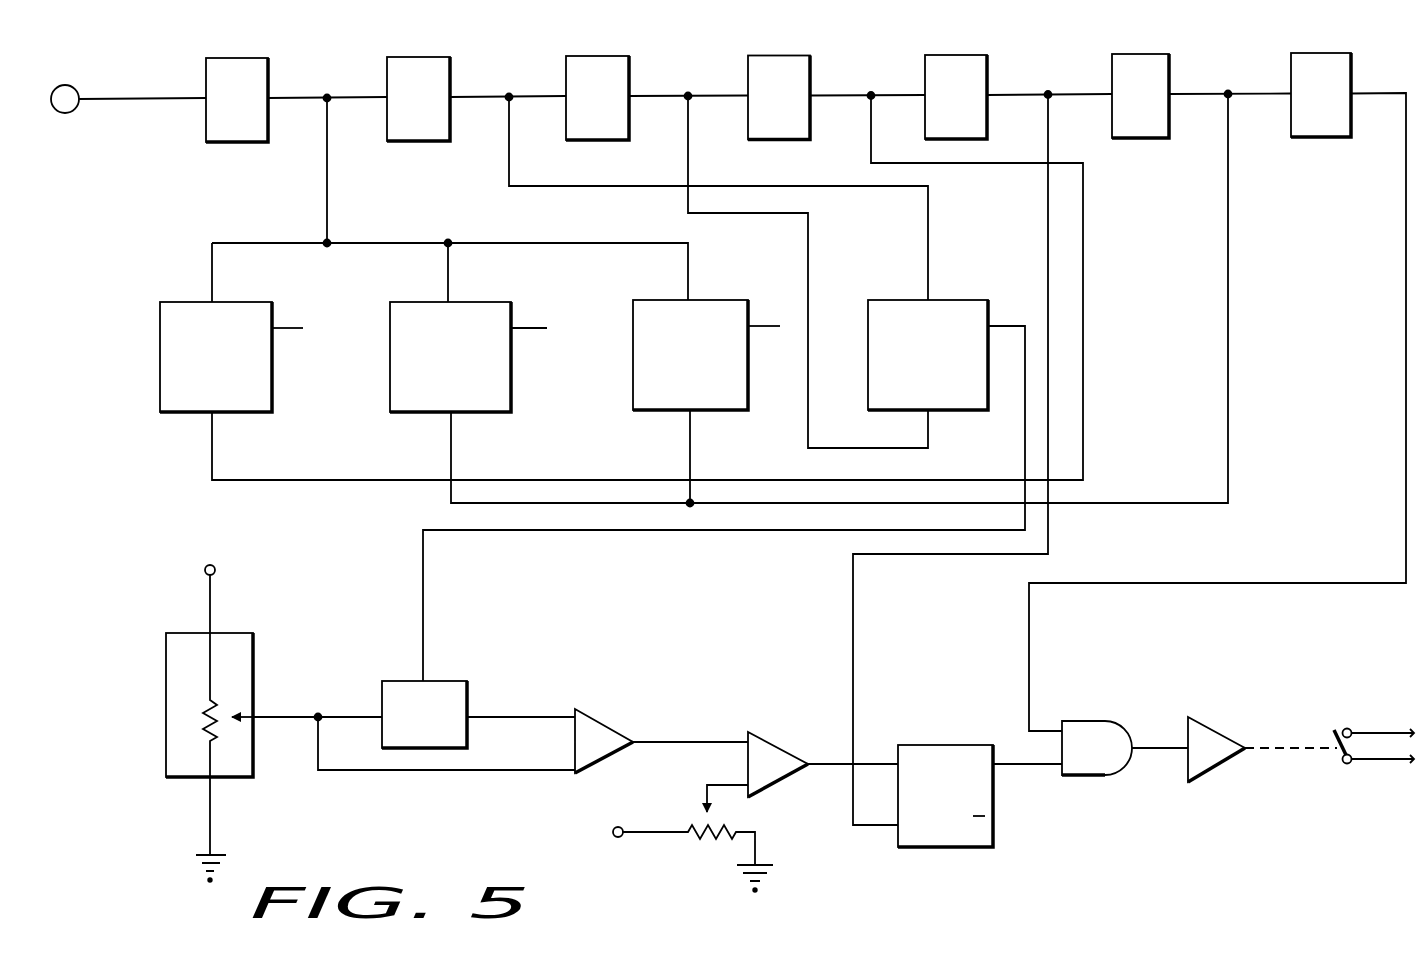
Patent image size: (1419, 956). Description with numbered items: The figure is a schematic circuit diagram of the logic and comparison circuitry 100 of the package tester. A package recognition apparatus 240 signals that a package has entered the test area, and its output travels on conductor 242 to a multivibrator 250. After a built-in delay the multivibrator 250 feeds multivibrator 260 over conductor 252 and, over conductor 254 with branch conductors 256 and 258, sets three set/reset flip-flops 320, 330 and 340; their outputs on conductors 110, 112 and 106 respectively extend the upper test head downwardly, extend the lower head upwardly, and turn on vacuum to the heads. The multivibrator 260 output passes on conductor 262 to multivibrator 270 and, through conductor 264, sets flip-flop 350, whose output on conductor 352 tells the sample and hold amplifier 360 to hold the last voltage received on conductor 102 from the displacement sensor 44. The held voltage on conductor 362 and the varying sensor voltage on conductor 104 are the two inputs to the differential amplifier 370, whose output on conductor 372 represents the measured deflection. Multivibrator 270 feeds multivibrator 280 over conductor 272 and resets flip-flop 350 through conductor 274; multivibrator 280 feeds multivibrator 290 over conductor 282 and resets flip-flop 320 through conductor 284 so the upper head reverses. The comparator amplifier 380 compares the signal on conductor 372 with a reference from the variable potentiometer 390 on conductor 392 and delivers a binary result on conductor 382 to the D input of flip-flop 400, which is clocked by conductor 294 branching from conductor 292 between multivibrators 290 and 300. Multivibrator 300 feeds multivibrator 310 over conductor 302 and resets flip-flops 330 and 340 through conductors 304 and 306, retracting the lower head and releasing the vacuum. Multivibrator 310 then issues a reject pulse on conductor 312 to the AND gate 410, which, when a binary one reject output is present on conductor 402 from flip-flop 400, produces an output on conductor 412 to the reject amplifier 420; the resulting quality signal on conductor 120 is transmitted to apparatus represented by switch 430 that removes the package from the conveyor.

The control circuit 100 is at (1147, 845).
The conductor 102 is at (298, 722).
The conductor 104 is at (540, 776).
The conductor 106 is at (760, 326).
The conductor 110 is at (287, 328).
The conductor 112 is at (525, 328).
The conductor 120 is at (1273, 747).
The displacement sensor 44 is at (166, 653).
The package recognition apparatus 240 is at (80, 72).
The conductor 242 is at (162, 88).
The multivibrator 250 is at (262, 50).
The conductor 252 is at (353, 98).
The conductor 254 is at (328, 184).
The conductor 256 is at (213, 262).
The conductor 258 is at (449, 262).
The multivibrator 260 is at (444, 50).
The conductor 262 is at (531, 94).
The conductor 264 is at (509, 178).
The multivibrator 270 is at (622, 48).
The conductor 272 is at (710, 94).
The conductor 274 is at (689, 196).
The multivibrator 280 is at (805, 48).
The conductor 282 is at (892, 94).
The conductor 284 is at (1084, 196).
The multivibrator 290 is at (985, 48).
The conductor 292 is at (1072, 94).
The conductor 294 is at (1046, 196).
The multivibrator 300 is at (1163, 48).
The conductor 302 is at (1256, 94).
The conductor 304 is at (1229, 196).
The conductor 306 is at (691, 460).
The multivibrator 310 is at (1343, 48).
The conductor 312 is at (1386, 94).
The flip-flop 320 is at (218, 300).
The flip-flop 330 is at (455, 300).
The flip-flop 340 is at (705, 288).
The flip-flop 350 is at (935, 298).
The conductor 352 is at (1000, 326).
The sample and hold amplifier 360 is at (464, 671).
The conductor 362 is at (540, 722).
The differential amplifier 370 is at (600, 724).
The conductor 372 is at (700, 740).
The comparator amplifier 380 is at (788, 736).
The conductor 382 is at (830, 764).
The potentiometer 390 is at (642, 824).
The conductor 392 is at (707, 792).
The flip-flop 400 is at (970, 735).
The conductor 402 is at (1033, 764).
The AND gate 410 is at (1092, 727).
The conductor 412 is at (1162, 748).
The reject amplifier 420 is at (1231, 726).
The switch 430 is at (1336, 754).